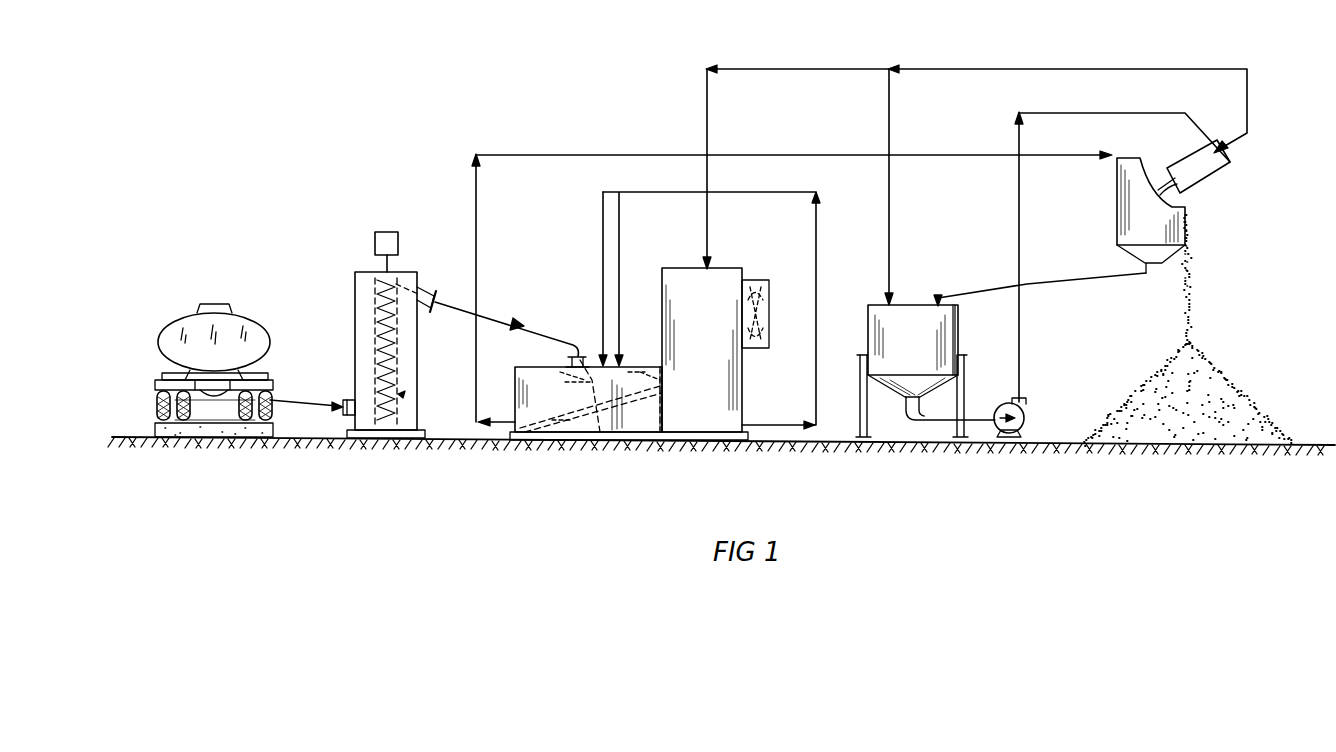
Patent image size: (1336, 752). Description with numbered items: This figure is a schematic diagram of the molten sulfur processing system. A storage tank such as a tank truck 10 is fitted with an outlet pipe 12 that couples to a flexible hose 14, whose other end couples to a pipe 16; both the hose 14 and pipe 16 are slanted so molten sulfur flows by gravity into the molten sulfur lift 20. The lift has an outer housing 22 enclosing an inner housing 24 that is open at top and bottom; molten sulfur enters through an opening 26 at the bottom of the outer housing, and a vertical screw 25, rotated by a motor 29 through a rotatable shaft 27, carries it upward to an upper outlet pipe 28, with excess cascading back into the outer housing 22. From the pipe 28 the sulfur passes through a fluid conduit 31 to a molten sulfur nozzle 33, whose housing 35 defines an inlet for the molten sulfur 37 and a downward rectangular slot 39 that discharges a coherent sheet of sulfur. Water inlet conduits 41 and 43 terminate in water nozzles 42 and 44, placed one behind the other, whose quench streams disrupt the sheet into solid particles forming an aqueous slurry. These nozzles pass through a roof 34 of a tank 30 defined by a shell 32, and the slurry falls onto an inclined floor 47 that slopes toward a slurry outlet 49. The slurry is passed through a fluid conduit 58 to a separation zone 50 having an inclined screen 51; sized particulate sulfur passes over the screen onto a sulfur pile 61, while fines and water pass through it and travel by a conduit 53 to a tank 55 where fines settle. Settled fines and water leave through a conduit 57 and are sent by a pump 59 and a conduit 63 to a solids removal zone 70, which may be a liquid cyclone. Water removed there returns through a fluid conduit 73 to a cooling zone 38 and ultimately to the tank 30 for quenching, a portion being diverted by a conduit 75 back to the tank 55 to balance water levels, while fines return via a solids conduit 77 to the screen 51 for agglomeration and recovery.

The tank truck 10 is at (158, 330).
The outlet pipe 12 is at (214, 398).
The flexible hose 14 is at (294, 402).
The pipe 16 is at (344, 414).
The molten sulfur lift 20 is at (381, 338).
The outer housing 22 is at (355, 326).
The inner housing 24 is at (400, 354).
The vertical screw 25 is at (405, 400).
The opening 26 is at (375, 448).
The rotatable shaft 27 is at (382, 262).
The pipe 28 is at (428, 291).
The motor 29 is at (387, 232).
The tank 30 is at (622, 409).
The fluid conduit 31 is at (526, 324).
The shell 32 is at (662, 385).
The molten sulfur nozzle 33 is at (600, 432).
The roof 34 is at (655, 375).
The housing 35 is at (578, 376).
The inlet for the molten sulfur 37 is at (577, 355).
The cooling zone 38 is at (769, 296).
The rectangular slot 39 is at (578, 379).
The water inlet conduit 41 is at (622, 247).
The water nozzle 42 is at (630, 405).
The water inlet conduit 43 is at (603, 256).
The water nozzle 44 is at (637, 366).
The inclined floor 47 is at (562, 421).
The slurry outlet 49 is at (497, 426).
The separation zone 50 is at (1157, 204).
The inclined screen 51 is at (1180, 207).
The conduit 53 is at (1090, 283).
The tank 55 is at (931, 394).
The conduit 57 is at (918, 426).
The fluid conduit 58 is at (480, 190).
The pump 59 is at (1025, 417).
The sulfur pile 61 is at (1218, 372).
The conduit 63 is at (1021, 372).
The solids removal zone 70 is at (1231, 163).
The fluid conduit 73 is at (1050, 69).
The conduit 75 is at (891, 213).
The solids conduit 77 is at (1158, 190).